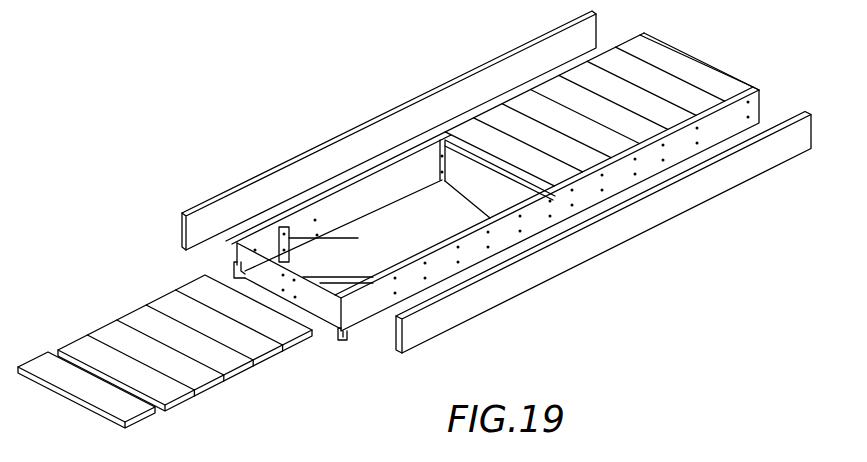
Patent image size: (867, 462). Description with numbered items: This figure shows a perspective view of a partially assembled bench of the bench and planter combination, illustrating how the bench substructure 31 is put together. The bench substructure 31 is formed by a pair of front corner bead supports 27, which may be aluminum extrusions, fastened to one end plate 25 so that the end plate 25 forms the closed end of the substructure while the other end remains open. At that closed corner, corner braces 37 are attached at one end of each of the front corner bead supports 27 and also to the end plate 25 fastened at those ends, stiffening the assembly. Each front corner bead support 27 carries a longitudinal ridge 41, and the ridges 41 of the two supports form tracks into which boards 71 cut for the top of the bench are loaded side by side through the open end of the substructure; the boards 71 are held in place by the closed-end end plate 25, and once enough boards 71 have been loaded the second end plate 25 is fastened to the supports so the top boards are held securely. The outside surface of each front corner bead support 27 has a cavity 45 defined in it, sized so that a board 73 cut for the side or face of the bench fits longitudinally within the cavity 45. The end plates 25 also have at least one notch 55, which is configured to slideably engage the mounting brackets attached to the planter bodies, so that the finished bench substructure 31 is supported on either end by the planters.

The bench substructure 31 is at (475, 211).
The board 73 is at (510, 54).
The boards 71 is at (677, 62).
The front corner bead supports 27 is at (740, 113).
The cavity 45 is at (682, 152).
The longitudinal ridge 41 is at (315, 198).
The corner braces 37 is at (289, 238).
The notch 55 is at (233, 272).
The end plates 25 is at (313, 298).